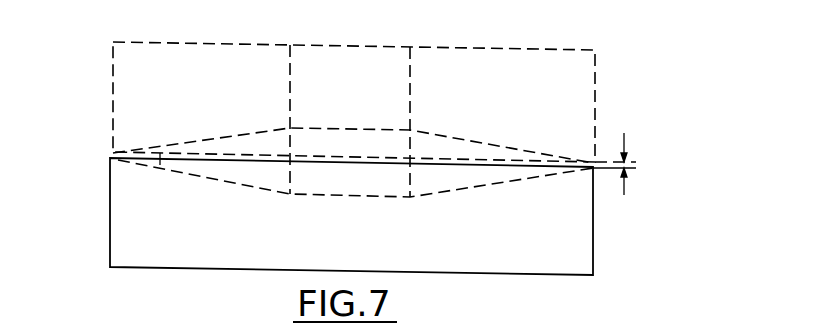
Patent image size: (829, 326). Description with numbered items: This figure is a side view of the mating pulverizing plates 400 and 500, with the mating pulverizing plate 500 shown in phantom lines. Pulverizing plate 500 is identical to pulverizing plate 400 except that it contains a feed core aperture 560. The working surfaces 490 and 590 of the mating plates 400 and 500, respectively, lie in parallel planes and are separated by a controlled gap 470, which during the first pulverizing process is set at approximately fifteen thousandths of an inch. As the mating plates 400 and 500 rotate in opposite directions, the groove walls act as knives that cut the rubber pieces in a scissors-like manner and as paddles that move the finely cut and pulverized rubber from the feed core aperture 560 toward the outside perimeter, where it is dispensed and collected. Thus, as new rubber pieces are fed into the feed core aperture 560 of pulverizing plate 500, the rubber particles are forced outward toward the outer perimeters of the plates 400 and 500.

The pulverizing plate 400 is at (110, 228).
The controlled gap 470 is at (637, 165).
The working surface 490 is at (192, 160).
The mating pulverizing plate 500 is at (113, 83).
The feed core aperture 560 is at (385, 63).
The working surface 590 is at (157, 163).